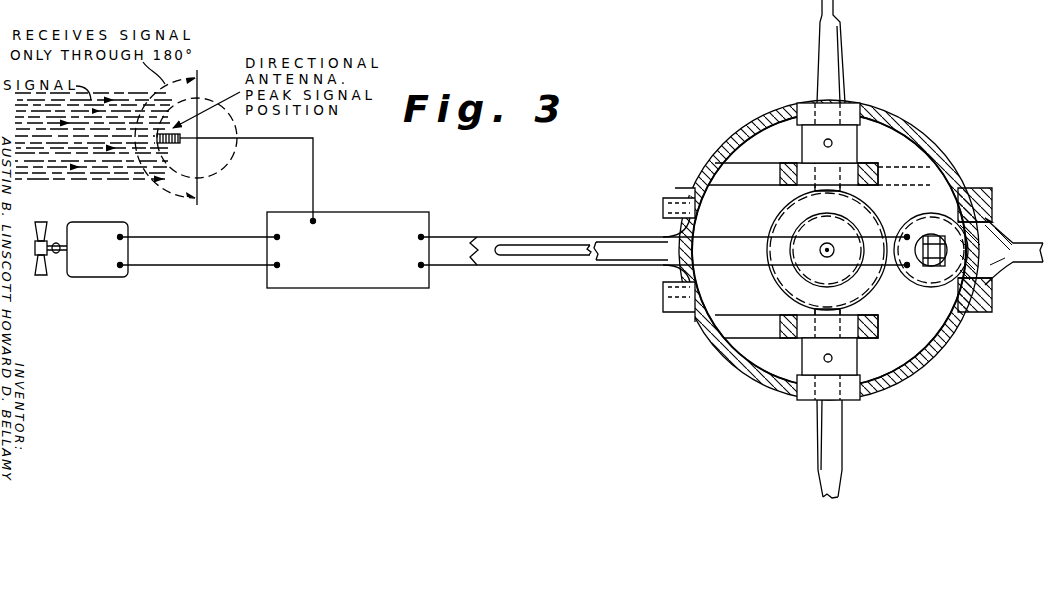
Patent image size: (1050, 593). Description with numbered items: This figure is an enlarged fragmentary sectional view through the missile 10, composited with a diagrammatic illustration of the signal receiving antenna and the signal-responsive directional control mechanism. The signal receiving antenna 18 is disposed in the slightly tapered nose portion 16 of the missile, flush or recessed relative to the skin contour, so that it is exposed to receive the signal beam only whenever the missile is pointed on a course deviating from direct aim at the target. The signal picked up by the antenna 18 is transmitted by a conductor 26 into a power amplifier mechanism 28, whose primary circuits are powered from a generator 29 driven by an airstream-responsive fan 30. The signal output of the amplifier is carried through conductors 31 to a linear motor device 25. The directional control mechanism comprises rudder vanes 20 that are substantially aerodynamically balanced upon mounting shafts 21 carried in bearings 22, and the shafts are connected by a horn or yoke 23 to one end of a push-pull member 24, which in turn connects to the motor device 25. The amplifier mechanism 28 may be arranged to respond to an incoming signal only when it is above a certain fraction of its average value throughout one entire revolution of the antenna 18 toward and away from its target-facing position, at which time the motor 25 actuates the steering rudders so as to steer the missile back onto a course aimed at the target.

The aerial missile 10 is at (932, 131).
The nose portion 16 is at (222, 172).
The signal receiving antenna 18 is at (168, 143).
The rudder vane 20 is at (836, 5).
The mounting shaft 21 is at (815, 141).
The bearing 22 is at (803, 106).
The horn or yoke 23 is at (933, 192).
The push-pull member 24 is at (920, 263).
The linear motor device 25 is at (925, 280).
The conductor 26 is at (316, 172).
The power amplifier mechanism 28 is at (391, 283).
The generator 29 is at (92, 278).
The airstream-responsive fan 30 is at (42, 224).
The conductors 31 is at (478, 252).